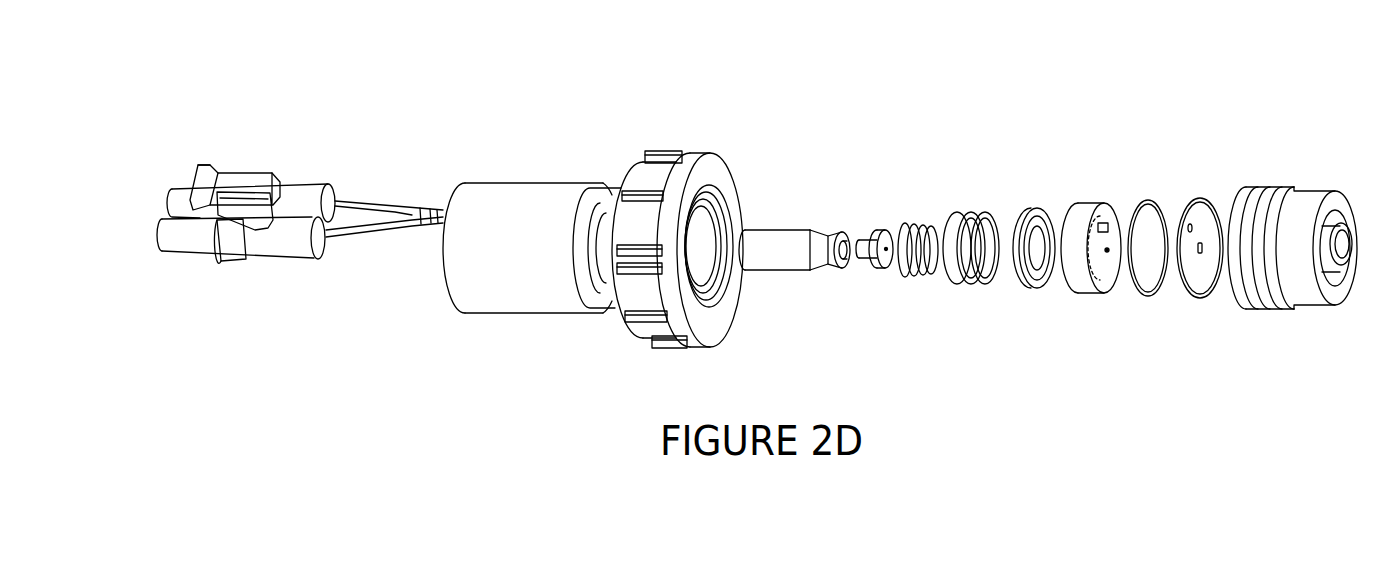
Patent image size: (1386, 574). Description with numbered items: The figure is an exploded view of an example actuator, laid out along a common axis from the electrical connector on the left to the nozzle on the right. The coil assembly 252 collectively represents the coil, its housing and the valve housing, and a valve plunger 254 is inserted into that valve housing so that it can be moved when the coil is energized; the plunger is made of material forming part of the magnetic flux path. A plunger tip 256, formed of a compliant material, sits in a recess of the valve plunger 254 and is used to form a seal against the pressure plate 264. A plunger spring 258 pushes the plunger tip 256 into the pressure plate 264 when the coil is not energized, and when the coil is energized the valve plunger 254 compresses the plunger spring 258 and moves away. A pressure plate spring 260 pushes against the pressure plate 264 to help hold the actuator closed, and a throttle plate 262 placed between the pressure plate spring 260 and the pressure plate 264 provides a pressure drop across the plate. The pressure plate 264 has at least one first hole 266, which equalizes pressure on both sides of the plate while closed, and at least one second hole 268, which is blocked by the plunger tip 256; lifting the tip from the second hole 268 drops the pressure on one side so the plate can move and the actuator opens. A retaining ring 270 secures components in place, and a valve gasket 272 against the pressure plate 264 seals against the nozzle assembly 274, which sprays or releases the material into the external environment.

The coil assembly 252 is at (527, 321).
The valve plunger 254 is at (774, 278).
The plunger tip 256 is at (854, 221).
The plunger spring 258 is at (890, 207).
The pressure plate spring 260 is at (960, 198).
The throttle plate 262 is at (1021, 193).
The pressure plate 264 is at (1079, 190).
The first hole 266 is at (1100, 233).
The second hole 268 is at (1108, 253).
The retaining ring 270 is at (1143, 191).
The valve gasket 272 is at (1192, 189).
The nozzle assembly 274 is at (1316, 178).